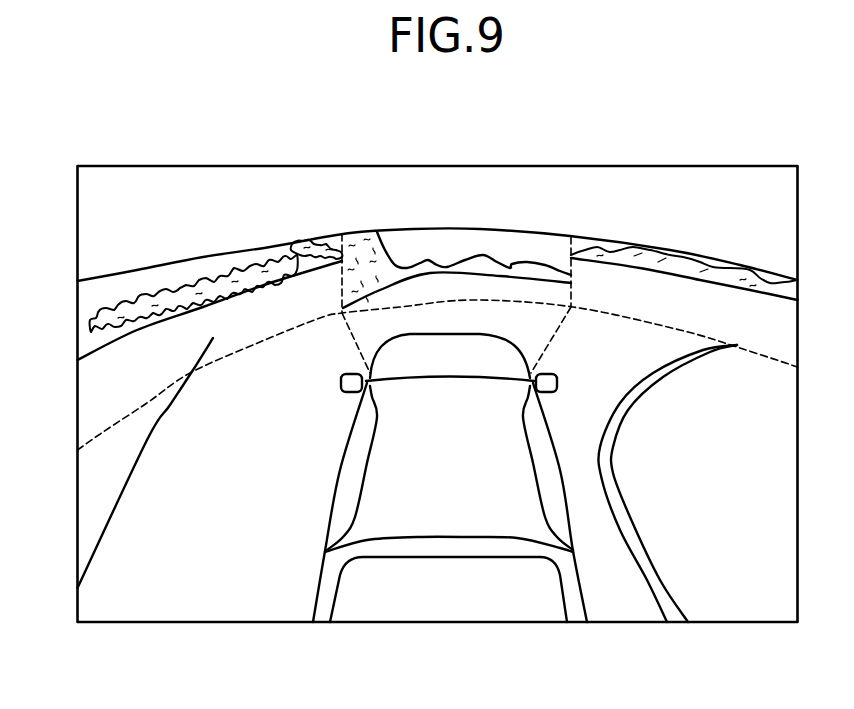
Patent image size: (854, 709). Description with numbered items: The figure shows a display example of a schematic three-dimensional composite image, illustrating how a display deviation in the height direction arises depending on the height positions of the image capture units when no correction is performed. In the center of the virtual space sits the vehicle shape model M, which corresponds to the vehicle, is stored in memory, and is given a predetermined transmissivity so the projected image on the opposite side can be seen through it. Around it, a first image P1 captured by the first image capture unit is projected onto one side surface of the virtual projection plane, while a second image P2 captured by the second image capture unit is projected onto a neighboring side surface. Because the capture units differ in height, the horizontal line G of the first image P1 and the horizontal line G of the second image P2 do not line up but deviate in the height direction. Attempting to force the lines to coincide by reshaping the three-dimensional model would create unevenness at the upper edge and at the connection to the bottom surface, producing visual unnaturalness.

The first image P1 is at (427, 280).
The second image P2 is at (263, 263).
The horizontal line G is at (98, 340).
The vehicle shape model M is at (468, 482).